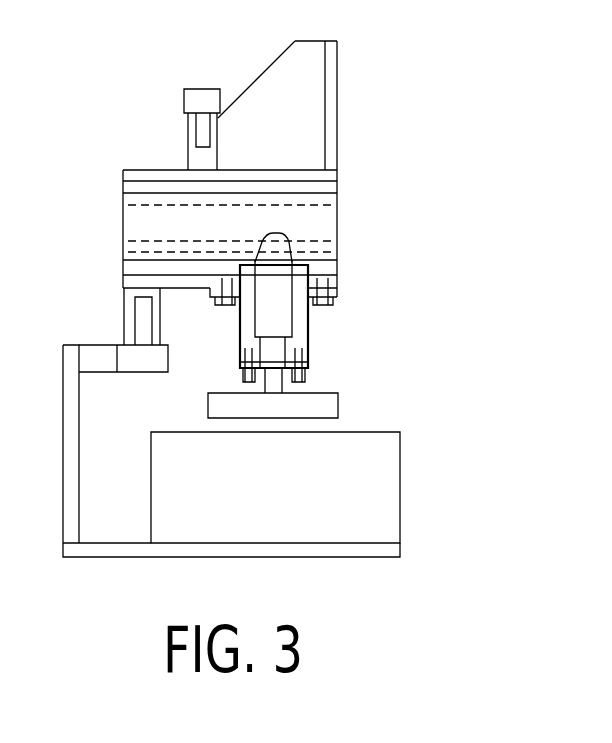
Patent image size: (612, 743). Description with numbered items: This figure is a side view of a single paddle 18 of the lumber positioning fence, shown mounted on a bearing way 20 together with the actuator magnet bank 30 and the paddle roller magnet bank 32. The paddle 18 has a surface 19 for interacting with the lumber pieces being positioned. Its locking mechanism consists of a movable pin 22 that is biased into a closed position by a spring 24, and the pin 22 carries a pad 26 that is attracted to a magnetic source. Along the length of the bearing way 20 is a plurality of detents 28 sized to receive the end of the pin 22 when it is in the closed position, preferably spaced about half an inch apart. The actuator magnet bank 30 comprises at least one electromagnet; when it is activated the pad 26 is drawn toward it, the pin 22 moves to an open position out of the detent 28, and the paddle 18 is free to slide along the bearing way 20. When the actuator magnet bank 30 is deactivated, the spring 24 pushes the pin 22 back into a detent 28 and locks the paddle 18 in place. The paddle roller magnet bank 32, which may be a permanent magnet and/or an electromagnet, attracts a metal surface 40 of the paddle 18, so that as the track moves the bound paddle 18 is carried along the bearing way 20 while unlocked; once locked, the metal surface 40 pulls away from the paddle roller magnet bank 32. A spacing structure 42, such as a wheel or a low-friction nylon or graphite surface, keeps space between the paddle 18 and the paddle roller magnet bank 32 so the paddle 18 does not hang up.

The paddle 18 is at (339, 96).
The surface 19 is at (337, 130).
The bearing way 20 is at (337, 243).
The movable pin 22 is at (280, 313).
The spring 24 is at (275, 352).
The pad 26 is at (207, 405).
The detents 28 is at (290, 241).
The actuator magnet bank 30 is at (403, 483).
The paddle roller magnet bank 32 is at (85, 342).
The metal surface 40 is at (140, 373).
The spacing structure 42 is at (130, 360).